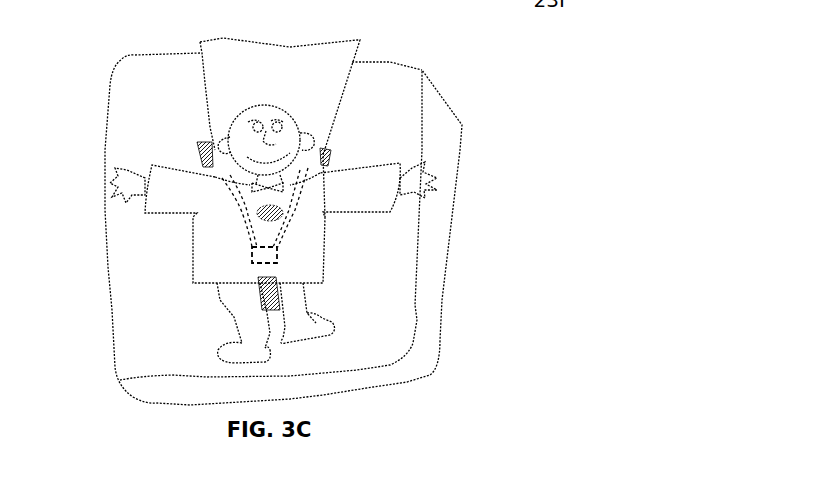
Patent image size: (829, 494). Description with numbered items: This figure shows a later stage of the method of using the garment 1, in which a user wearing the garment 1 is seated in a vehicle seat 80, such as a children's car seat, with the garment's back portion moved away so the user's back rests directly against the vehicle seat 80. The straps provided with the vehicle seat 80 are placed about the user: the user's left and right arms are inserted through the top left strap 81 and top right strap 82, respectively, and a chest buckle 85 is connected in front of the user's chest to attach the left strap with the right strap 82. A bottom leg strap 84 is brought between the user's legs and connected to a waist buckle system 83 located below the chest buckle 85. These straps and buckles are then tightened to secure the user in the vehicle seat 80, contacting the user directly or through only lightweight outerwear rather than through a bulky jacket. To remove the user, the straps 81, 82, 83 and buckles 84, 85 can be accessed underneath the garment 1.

The garment 1 is at (238, 62).
The vehicle seat 80 is at (375, 77).
The top left strap 81 is at (323, 154).
The top right strap 82 is at (193, 147).
The waist buckle system 83 is at (260, 293).
The bottom leg strap 84 is at (250, 257).
The chest buckle 85 is at (265, 211).